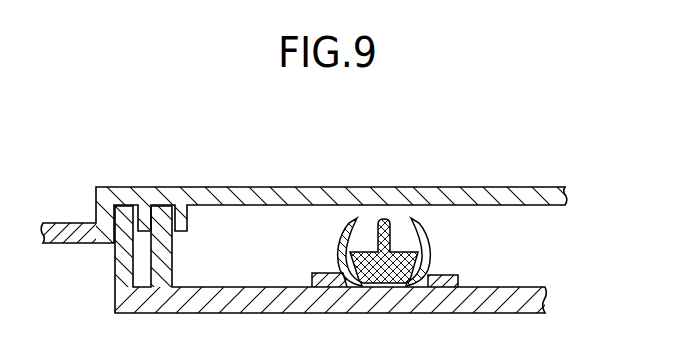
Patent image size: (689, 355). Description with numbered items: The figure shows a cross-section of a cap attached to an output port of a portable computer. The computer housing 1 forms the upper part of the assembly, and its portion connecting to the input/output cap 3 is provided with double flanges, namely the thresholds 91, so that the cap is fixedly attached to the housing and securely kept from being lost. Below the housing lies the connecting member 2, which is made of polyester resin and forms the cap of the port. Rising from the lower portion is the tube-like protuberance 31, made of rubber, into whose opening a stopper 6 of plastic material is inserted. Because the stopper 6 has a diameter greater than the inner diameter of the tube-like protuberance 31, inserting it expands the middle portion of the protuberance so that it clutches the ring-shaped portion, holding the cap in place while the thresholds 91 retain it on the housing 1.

The computer housing 1 is at (287, 195).
The connecting member 2 is at (452, 277).
The input/output cap 3 is at (344, 245).
The stopper 6 is at (383, 219).
The tube-like protuberance 31 is at (425, 243).
The threshold 91 is at (145, 237).